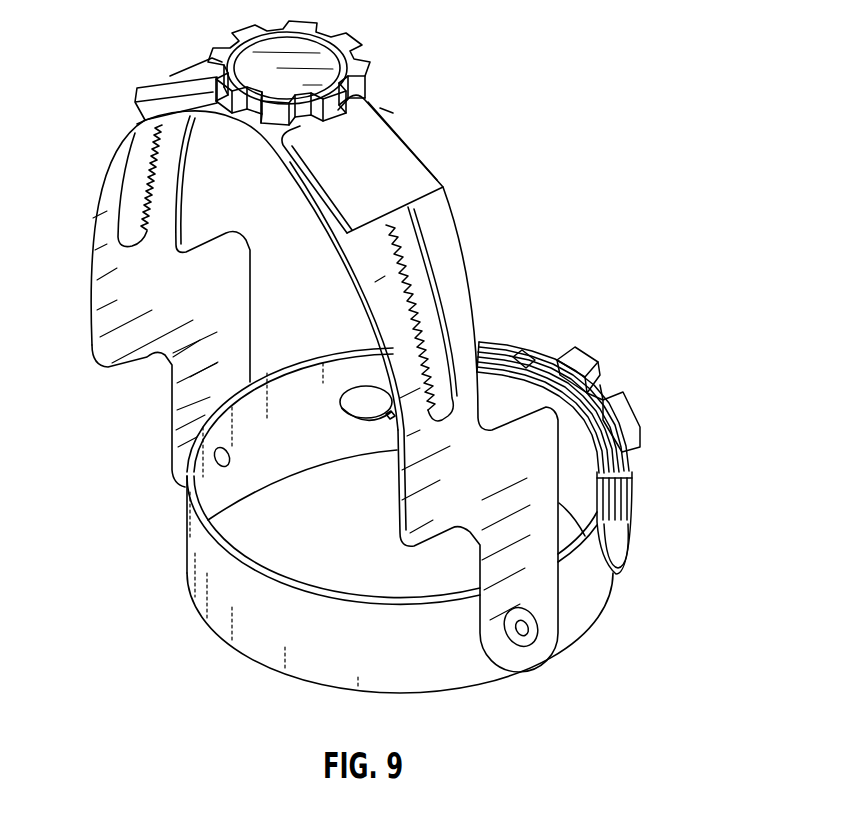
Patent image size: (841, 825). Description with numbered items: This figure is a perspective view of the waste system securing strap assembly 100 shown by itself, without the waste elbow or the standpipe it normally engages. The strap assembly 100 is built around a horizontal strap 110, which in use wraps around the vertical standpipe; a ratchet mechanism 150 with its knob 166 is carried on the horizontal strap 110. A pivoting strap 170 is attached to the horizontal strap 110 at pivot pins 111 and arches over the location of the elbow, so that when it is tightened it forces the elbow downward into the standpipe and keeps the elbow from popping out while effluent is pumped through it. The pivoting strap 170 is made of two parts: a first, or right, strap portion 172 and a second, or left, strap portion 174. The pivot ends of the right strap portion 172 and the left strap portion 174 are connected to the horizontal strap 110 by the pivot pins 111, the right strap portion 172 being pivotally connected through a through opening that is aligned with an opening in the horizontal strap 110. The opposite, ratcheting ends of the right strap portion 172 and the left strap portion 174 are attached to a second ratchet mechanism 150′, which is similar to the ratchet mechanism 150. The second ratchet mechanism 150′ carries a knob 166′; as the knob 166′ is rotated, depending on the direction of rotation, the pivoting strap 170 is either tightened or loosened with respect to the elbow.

The strap assembly 100 is at (122, 27).
The horizontal strap 110 is at (590, 630).
The pivot pin 111 is at (223, 466).
The ratchet mechanism 150 is at (637, 492).
The second ratchet mechanism 150′ is at (403, 128).
The knob 166 is at (587, 355).
The knob 166′ is at (308, 22).
The pivoting strap 170 is at (458, 243).
The right strap portion 172 is at (412, 493).
The left strap portion 174 is at (253, 307).